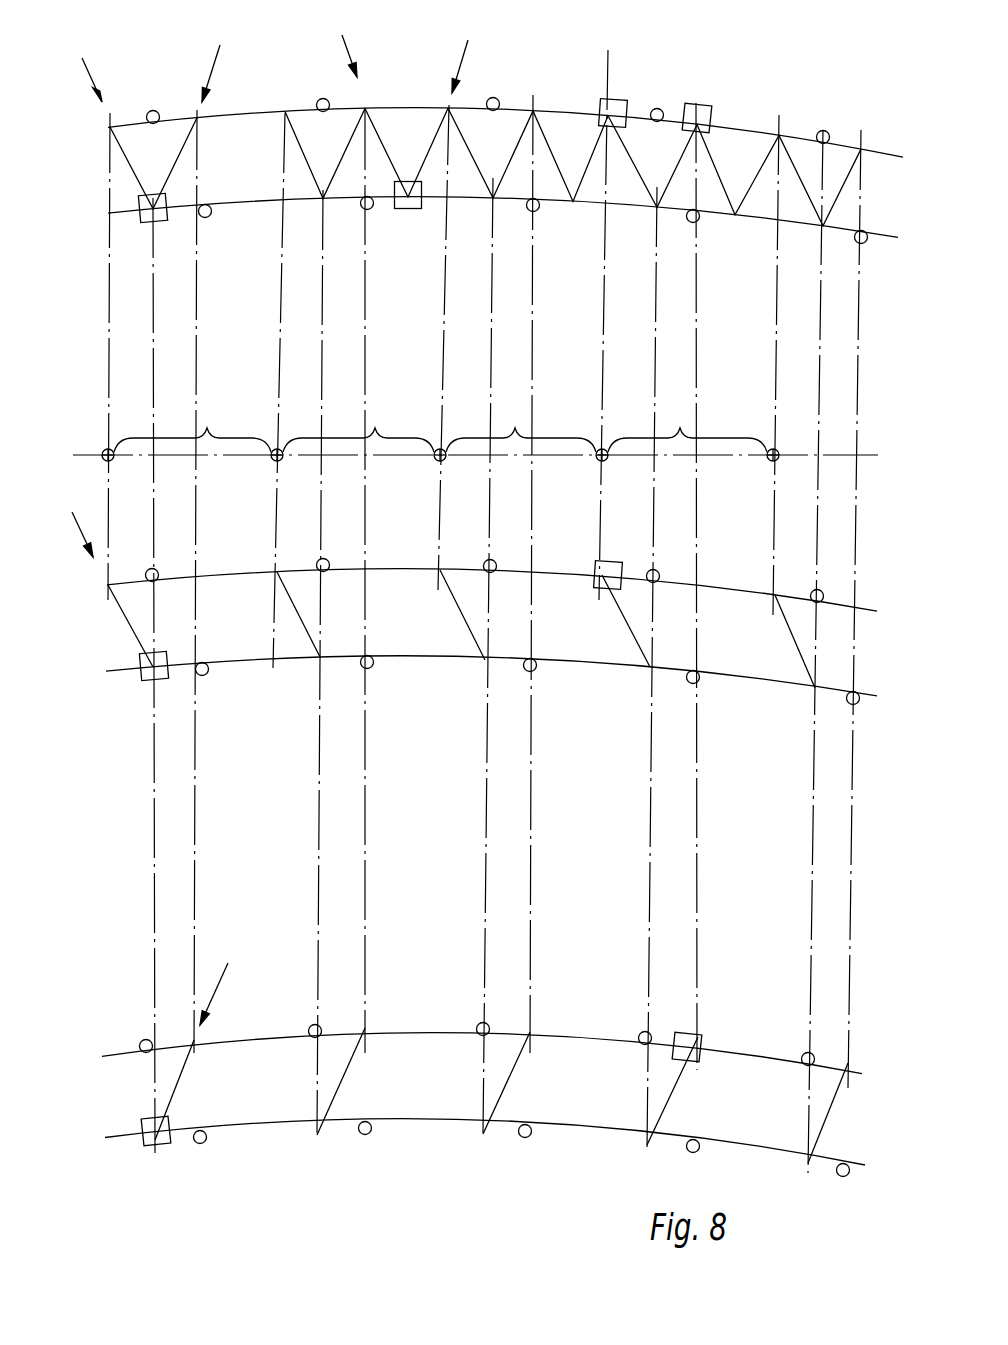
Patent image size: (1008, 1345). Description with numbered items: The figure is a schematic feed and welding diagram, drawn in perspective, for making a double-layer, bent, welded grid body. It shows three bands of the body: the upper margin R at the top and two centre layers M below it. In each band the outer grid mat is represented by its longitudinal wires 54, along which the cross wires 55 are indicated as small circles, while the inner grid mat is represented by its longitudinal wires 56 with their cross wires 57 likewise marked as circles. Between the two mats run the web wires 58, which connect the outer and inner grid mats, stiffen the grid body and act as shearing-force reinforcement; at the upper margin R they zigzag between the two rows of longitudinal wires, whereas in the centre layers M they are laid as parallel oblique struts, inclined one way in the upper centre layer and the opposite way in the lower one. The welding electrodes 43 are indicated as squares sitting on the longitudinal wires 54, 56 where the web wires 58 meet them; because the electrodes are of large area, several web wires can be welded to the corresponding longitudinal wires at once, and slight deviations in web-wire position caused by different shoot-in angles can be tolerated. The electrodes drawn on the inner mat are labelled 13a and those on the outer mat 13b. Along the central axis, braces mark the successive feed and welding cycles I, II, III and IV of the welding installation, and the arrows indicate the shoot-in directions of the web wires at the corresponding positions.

The longitudinal wires of the outer grid mat 54 is at (743, 127).
The cross wires of the outer grid mat 55 is at (493, 100).
The longitudinal wires of the inner grid mat 56 is at (763, 217).
The cross wires of the inner grid mat 57 is at (538, 210).
The web wires 58 is at (432, 147).
The welding electrodes 43 is at (436, 617).
The thread guide hook (first type) 13a is at (410, 208).
The thread guide hook (second type) 13b is at (700, 105).
The upper margin of the grid body R is at (123, 201).
The centre layers of the grid body M is at (123, 640).
The first feed and welding cycle I is at (192, 422).
The second feed and welding cycle II is at (358, 422).
The third feed and welding cycle III is at (521, 424).
The fourth feed and welding cycle IV is at (687, 422).